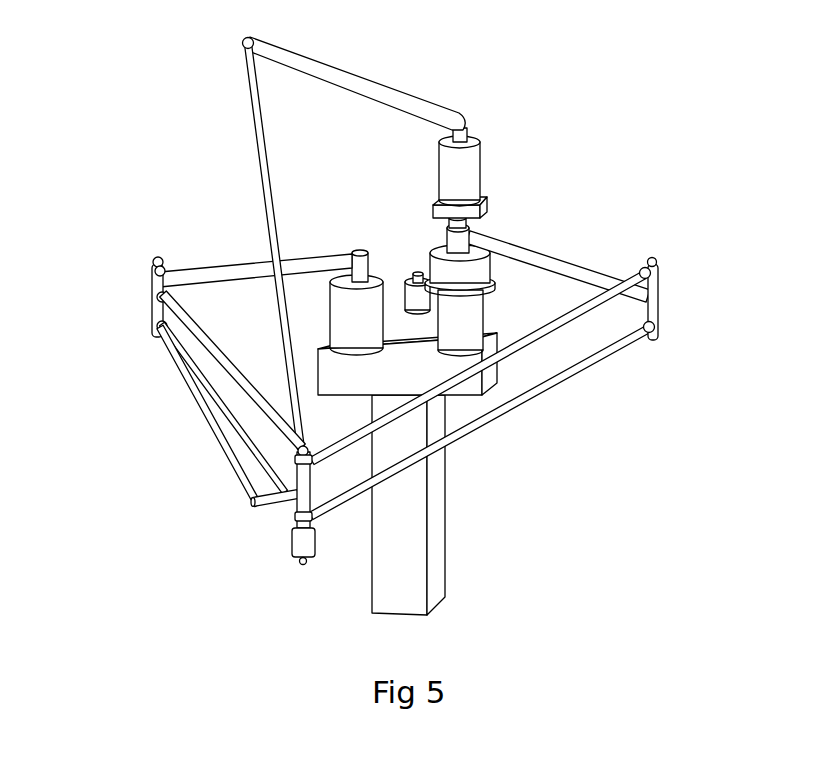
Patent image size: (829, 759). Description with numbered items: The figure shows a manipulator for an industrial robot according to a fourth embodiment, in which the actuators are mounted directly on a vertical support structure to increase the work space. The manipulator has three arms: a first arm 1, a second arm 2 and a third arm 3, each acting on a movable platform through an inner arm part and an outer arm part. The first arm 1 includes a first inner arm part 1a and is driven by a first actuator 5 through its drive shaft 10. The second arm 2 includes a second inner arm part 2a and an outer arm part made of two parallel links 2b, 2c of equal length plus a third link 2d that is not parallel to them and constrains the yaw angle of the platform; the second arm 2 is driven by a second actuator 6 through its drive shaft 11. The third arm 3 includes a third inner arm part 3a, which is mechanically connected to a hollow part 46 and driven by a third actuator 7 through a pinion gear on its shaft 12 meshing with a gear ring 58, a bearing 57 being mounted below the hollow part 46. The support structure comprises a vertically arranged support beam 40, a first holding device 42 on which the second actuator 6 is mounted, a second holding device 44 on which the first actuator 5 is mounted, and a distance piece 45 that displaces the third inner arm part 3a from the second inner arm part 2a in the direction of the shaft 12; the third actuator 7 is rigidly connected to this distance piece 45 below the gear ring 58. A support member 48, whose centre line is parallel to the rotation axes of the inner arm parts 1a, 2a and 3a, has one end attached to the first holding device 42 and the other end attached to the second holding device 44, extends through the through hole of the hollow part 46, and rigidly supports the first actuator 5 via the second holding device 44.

The first arm 1 is at (235, 126).
The first inner arm part 1a is at (342, 75).
The second arm 2 is at (140, 282).
The second inner arm part 2a is at (228, 277).
The link 2b is at (235, 458).
The link 2c is at (245, 483).
The link 2d is at (203, 330).
The third arm 3 is at (682, 285).
The third inner arm part 3a is at (565, 262).
The first actuator 5 is at (470, 177).
The second actuator 6 is at (350, 315).
The third actuator 7 is at (418, 302).
The drive shaft 10 is at (462, 133).
The drive shaft 11 is at (356, 250).
The shaft 12 is at (417, 277).
The support beam 40 is at (405, 517).
The first holding device 42 is at (487, 377).
The second holding device 44 is at (433, 207).
The distance piece 45 is at (482, 318).
The hollow part 46 is at (452, 235).
The support member 48 is at (468, 224).
The bearing 57 is at (483, 273).
The gear ring 58 is at (485, 292).